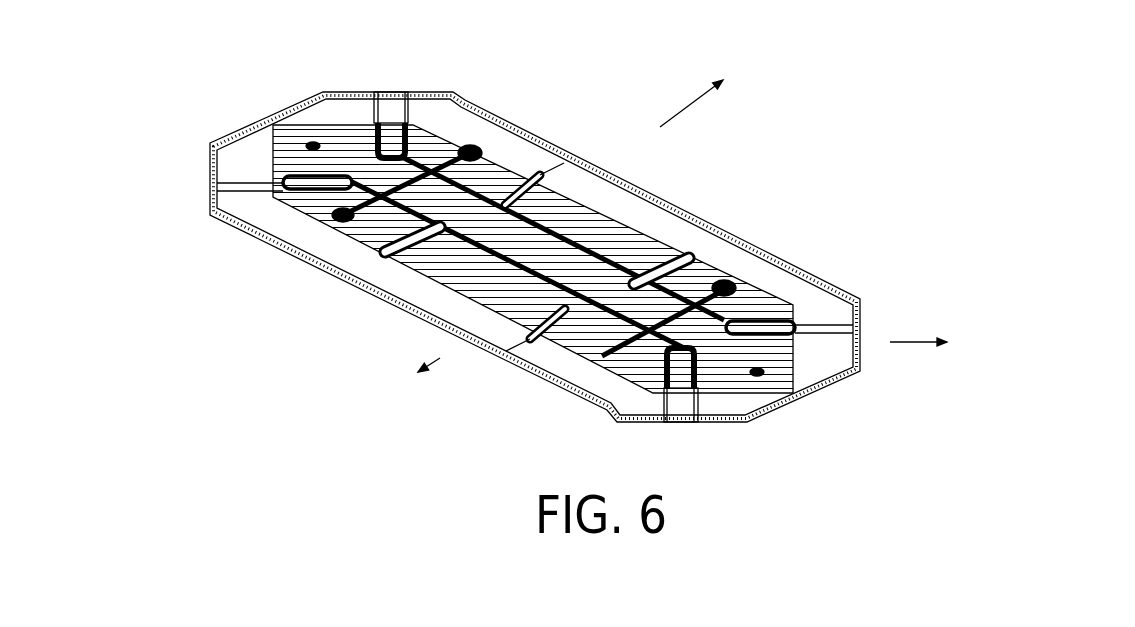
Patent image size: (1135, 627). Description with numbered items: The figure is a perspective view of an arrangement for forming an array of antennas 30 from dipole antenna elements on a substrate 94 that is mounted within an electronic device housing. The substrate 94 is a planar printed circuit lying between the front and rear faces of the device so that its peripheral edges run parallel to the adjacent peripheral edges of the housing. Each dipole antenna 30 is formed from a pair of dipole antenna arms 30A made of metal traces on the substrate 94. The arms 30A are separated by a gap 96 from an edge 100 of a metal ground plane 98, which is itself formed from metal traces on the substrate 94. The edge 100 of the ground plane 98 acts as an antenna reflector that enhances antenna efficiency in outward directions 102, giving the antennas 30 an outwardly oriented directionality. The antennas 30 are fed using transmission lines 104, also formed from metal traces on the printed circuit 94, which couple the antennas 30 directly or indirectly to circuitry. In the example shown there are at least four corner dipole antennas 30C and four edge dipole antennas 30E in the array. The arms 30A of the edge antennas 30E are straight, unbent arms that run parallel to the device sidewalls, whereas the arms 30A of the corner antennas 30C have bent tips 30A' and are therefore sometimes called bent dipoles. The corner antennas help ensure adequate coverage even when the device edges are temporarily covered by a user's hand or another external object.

The dipole antenna 30 is at (460, 53).
The dipole antenna arm 30A is at (554, 207).
The bent tip 30A' is at (450, 248).
The corner dipole antenna 30C is at (435, 75).
The edge dipole antenna 30E is at (640, 168).
The substrate 94 is at (641, 207).
The gap 96 is at (456, 328).
The metal ground plane 98 is at (450, 258).
The edge 100 is at (440, 265).
The outward directions 102 is at (680, 107).
The transmission line 104 is at (292, 176).